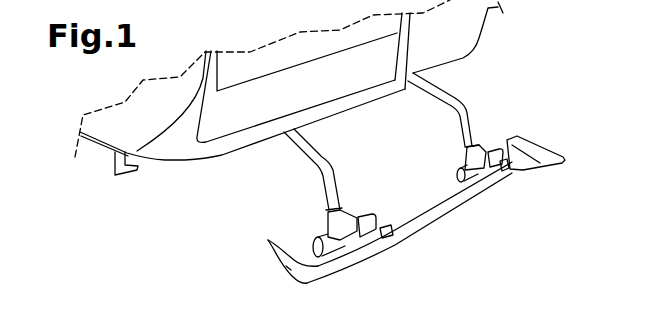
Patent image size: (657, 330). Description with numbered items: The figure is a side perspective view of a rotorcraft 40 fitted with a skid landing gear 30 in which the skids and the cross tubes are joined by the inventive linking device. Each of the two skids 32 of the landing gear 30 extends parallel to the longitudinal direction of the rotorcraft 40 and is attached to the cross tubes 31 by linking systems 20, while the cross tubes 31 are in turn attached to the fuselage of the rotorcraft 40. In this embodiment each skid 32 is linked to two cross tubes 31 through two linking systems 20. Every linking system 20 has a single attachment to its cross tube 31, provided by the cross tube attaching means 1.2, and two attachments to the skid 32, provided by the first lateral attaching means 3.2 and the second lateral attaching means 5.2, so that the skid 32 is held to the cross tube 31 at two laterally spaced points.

The rotorcraft 40 is at (113, 192).
The skid landing gear 30 is at (218, 288).
The cross tube 31 is at (323, 161).
The linking system 20 is at (351, 208).
The cross tube attaching means 1.2 is at (328, 221).
The second lateral attaching means 5.2 is at (392, 235).
The skid 32 is at (440, 218).
The first lateral attaching means 3.2 is at (303, 283).